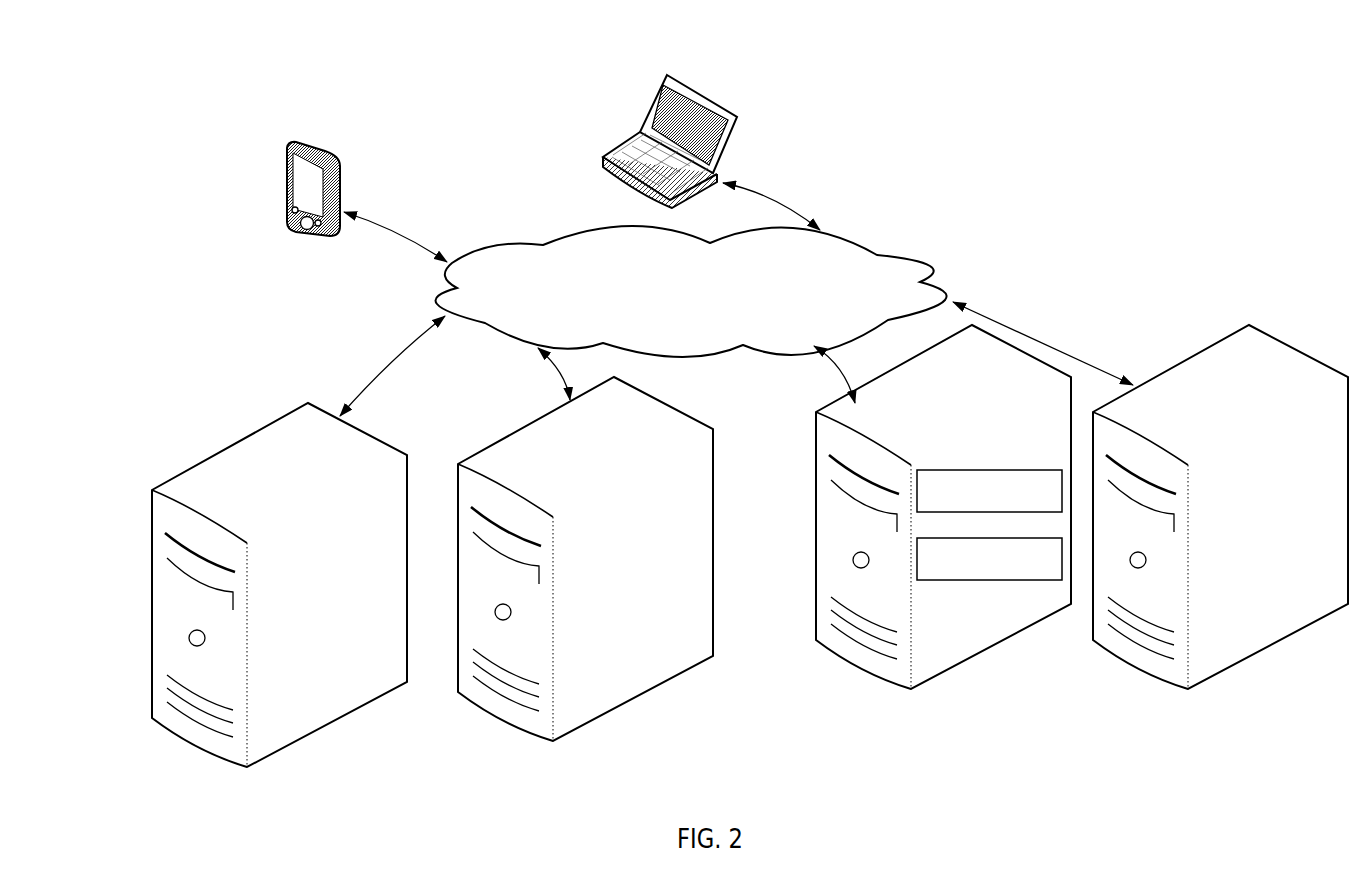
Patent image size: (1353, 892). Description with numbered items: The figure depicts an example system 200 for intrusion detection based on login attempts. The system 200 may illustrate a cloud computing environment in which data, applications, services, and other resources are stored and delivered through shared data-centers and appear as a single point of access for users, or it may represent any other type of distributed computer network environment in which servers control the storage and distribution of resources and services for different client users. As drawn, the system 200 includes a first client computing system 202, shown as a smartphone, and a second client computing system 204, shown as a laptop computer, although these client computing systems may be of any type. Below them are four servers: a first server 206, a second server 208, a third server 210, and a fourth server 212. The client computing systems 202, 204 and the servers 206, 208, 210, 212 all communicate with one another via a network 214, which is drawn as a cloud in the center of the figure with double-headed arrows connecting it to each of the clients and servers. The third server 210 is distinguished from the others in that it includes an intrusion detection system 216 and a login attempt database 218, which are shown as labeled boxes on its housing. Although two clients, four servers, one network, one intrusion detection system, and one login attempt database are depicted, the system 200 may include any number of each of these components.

The system 200 is at (784, 90).
The first client computing system 202 is at (288, 143).
The second client computing system 204 is at (667, 76).
The first server 206 is at (279, 602).
The second server 208 is at (585, 576).
The third server 210 is at (943, 524).
The fourth server 212 is at (1220, 519).
The network 214 is at (691, 291).
The intrusion detection system 216 is at (989, 491).
The login attempt database 218 is at (989, 559).